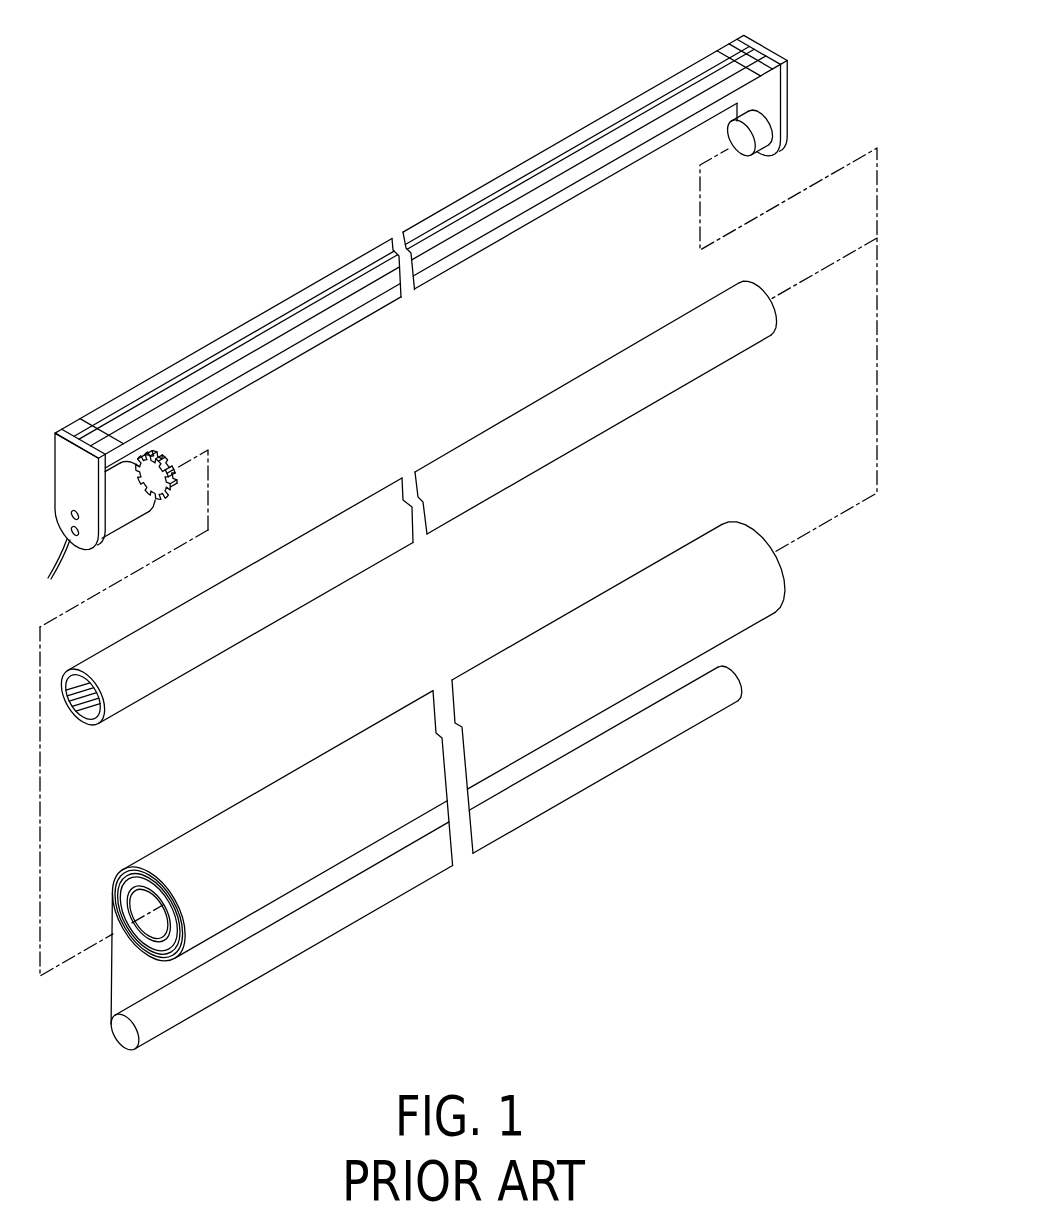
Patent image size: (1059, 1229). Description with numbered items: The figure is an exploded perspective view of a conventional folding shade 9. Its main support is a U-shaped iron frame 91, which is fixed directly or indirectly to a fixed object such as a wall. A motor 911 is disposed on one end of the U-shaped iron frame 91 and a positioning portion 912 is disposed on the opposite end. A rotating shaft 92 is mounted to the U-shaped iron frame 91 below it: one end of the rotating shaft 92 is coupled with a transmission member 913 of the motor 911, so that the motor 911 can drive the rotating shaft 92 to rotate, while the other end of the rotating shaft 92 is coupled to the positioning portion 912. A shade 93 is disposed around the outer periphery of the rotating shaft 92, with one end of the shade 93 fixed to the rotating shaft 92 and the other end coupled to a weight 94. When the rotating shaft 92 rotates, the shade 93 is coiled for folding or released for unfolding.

The folding shade 9 is at (446, 130).
The U-shaped iron frame 91 is at (297, 300).
The motor 911 is at (121, 490).
The positioning portion 912 is at (757, 137).
The transmission member 913 is at (170, 455).
The rotating shaft 92 is at (122, 700).
The shade 93 is at (308, 775).
The weight 94 is at (373, 897).